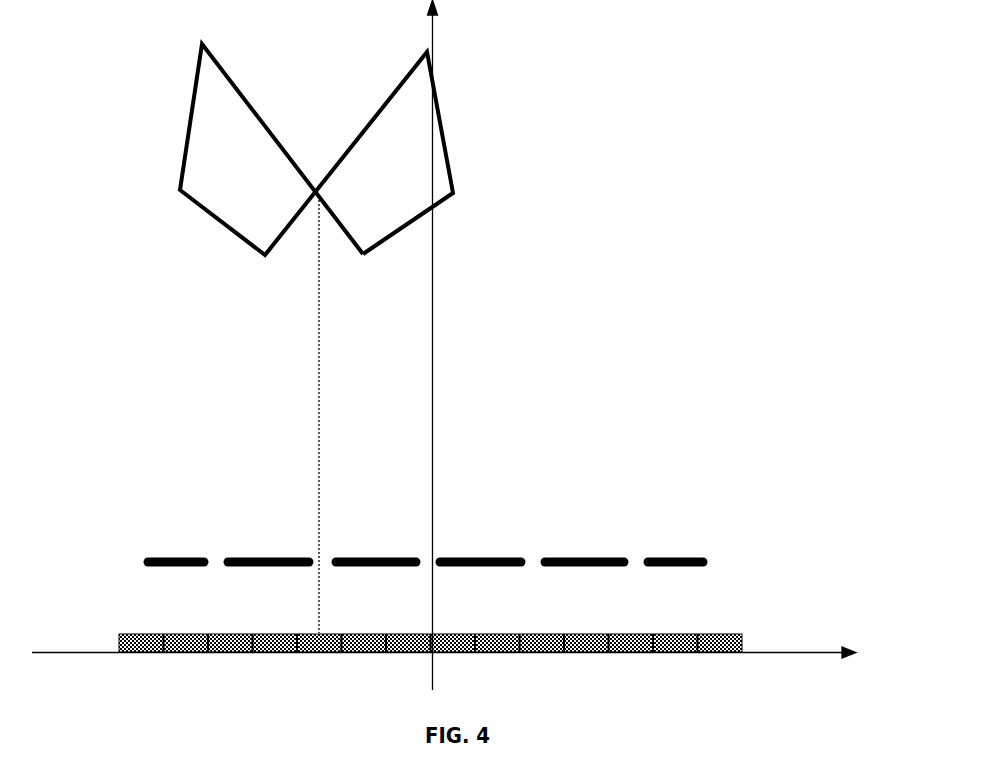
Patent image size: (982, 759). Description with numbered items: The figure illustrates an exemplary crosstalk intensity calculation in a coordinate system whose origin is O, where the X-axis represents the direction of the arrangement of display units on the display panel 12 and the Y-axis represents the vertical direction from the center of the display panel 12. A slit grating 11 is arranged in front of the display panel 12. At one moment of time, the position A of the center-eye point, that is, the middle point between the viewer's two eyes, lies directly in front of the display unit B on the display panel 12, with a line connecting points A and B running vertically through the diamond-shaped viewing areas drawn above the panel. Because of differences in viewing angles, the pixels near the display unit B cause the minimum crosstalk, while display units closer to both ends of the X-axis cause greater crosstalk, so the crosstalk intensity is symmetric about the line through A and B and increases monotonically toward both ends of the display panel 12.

The slit grating 11 is at (718, 634).
The display panel 12 is at (682, 556).
The center-eye point position A is at (316, 149).
The display unit B is at (328, 414).
The coordinate origin O is at (444, 351).